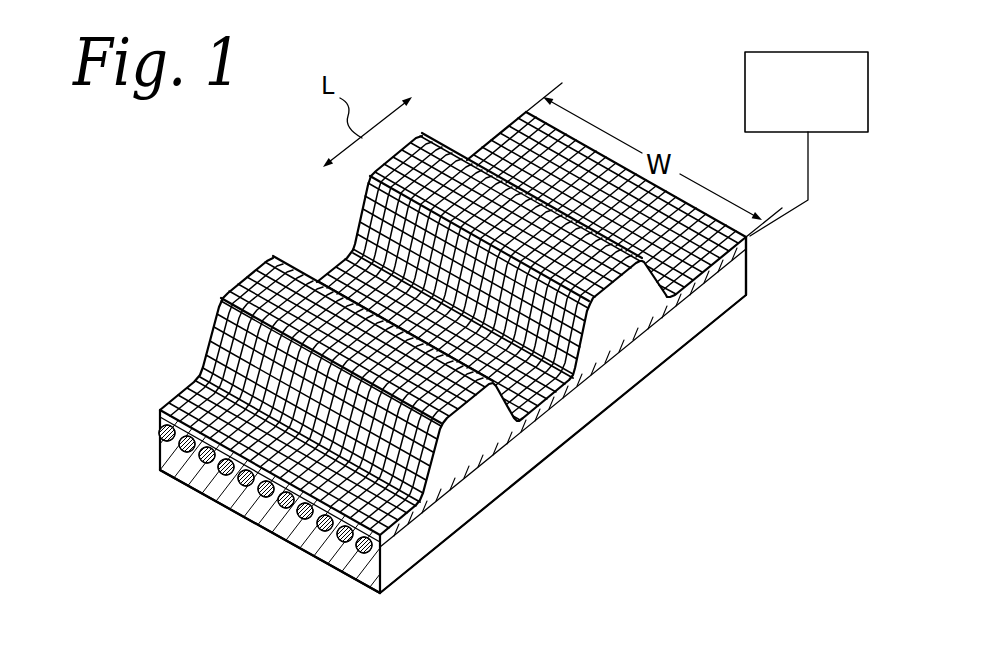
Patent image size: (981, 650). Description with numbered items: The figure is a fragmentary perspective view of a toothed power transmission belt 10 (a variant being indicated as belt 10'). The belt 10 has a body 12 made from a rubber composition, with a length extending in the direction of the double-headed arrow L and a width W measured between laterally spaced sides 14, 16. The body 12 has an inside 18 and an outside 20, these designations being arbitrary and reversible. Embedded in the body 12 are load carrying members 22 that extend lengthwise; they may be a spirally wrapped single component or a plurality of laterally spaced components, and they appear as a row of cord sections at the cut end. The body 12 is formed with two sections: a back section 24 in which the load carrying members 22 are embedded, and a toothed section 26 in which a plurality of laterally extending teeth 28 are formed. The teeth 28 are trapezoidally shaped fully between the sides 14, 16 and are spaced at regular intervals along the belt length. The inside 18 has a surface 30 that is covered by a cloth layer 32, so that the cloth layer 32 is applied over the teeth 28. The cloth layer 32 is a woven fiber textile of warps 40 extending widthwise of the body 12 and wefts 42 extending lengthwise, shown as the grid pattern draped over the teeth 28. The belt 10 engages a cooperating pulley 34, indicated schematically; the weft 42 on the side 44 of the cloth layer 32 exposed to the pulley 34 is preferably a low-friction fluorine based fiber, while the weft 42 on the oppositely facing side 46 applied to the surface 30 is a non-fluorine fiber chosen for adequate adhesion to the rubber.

The toothed power transmission belt 10 is at (453, 298).
The alternative power transmission belt 10' is at (882, 629).
The body 12 is at (758, 276).
The side 14 is at (428, 512).
The side 16 is at (160, 446).
The inside 18 is at (613, 282).
The outside 20 is at (642, 390).
The load carrying member 22 is at (333, 543).
The back section 24 is at (401, 573).
The toothed section 26 is at (657, 300).
The teeth 28 is at (642, 322).
The surface 30 is at (345, 262).
The cloth layer 32 is at (190, 368).
The pulley 34 is at (796, 124).
The warps 40 is at (283, 257).
The wefts 42 is at (240, 290).
The side of the cloth layer 44 is at (445, 182).
The oppositely facing side of the cloth layer 46 is at (475, 412).